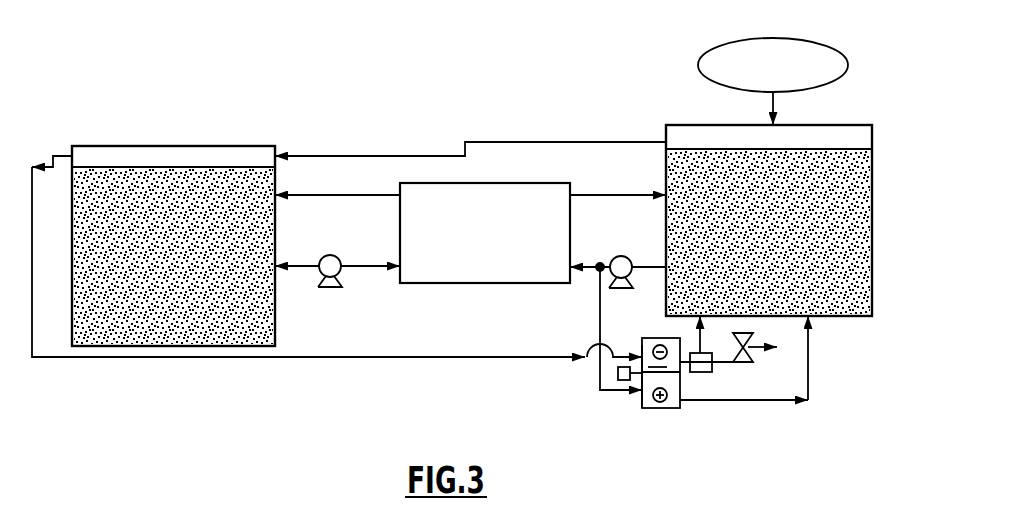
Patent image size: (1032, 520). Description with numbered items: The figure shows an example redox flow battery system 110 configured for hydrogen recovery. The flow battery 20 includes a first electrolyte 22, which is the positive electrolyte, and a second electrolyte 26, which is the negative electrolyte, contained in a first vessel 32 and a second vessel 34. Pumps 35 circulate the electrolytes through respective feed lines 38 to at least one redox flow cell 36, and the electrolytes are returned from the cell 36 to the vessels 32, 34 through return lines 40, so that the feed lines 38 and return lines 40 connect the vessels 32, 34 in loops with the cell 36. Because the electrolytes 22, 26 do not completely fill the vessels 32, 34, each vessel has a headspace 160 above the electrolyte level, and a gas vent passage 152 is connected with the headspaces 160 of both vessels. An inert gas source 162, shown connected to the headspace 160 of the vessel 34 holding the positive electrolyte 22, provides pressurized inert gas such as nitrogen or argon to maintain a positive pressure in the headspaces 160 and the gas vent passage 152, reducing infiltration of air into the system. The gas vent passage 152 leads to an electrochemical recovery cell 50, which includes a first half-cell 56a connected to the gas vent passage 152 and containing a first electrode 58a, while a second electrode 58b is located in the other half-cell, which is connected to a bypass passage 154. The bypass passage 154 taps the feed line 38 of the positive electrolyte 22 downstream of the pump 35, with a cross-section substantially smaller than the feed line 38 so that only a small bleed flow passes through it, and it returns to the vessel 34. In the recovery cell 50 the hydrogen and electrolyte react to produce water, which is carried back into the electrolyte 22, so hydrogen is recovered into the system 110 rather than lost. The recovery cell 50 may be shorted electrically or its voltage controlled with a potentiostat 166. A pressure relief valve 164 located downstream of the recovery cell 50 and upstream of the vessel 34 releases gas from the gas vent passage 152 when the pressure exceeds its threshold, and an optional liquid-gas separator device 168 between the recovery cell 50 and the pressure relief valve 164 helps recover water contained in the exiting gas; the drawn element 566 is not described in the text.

The redox flow battery system 20 is at (378, 303).
The second electrolyte tank 22 is at (843, 278).
The first electrolyte 26 is at (100, 324).
The first electrolyte tank 32 is at (72, 257).
The second electrolyte 34 is at (872, 210).
The pump 35 is at (334, 256).
The RFB cell 36 is at (477, 284).
The feed line 38 is at (290, 264).
The return line 40 is at (333, 195).
The rebalancing cell 50 is at (665, 408).
The electrolyte chamber 56a is at (642, 352).
The negative electrode 58a is at (663, 365).
The positive electrode 58b is at (667, 380).
The redox flow battery system 110 is at (238, 438).
The bypass line 152 is at (370, 156).
The feed line to rebalancing cell 154 is at (600, 293).
The headspace 160 is at (216, 146).
The inert gas source 162 is at (728, 45).
The vent valve 164 is at (753, 362).
The sensor 166 is at (618, 372).
The gas separator 168 is at (690, 352).
The electrode chamber 566 is at (650, 397).